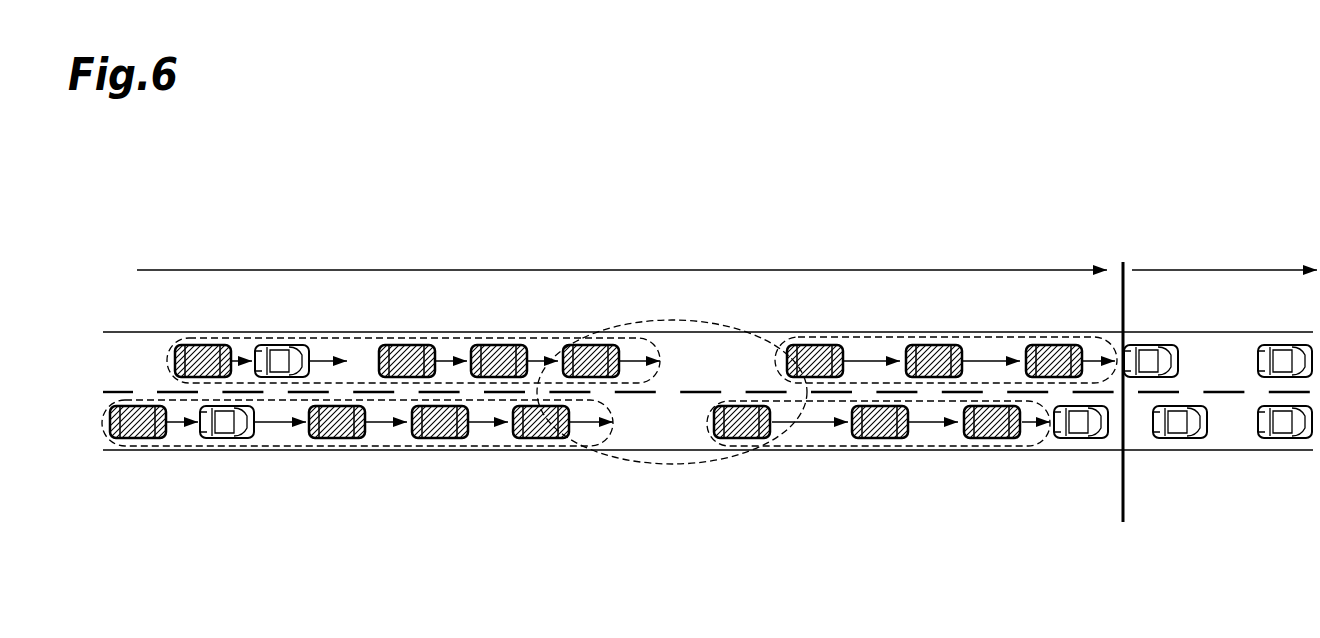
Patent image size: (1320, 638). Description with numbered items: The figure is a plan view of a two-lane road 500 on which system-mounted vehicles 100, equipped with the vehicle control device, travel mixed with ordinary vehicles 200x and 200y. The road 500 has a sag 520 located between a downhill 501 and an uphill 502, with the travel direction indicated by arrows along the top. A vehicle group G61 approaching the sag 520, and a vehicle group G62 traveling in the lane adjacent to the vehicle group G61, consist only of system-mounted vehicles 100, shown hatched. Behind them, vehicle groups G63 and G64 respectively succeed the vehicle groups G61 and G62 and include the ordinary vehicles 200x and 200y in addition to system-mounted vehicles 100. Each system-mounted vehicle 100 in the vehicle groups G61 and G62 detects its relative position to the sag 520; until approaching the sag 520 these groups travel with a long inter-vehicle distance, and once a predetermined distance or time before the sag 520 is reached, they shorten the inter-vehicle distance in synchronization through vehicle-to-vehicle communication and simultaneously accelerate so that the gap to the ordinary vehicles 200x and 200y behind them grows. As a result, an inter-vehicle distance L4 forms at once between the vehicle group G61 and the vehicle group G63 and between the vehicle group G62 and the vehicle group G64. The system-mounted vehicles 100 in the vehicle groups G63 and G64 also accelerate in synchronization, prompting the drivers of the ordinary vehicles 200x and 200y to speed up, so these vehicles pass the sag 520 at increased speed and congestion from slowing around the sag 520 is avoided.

The system-mounted vehicle 100 is at (590, 345).
The ordinary vehicle 200x is at (228, 440).
The ordinary vehicle 200y is at (280, 345).
The vehicle group G61 is at (876, 448).
The vehicle group G62 is at (864, 337).
The vehicle group G63 is at (448, 447).
The vehicle group G64 is at (415, 342).
The inter-vehicle distance L4 is at (600, 456).
The road 500 is at (1267, 332).
The downhill 501 is at (1032, 269).
The uphill 502 is at (1237, 269).
The sag 520 is at (1121, 293).